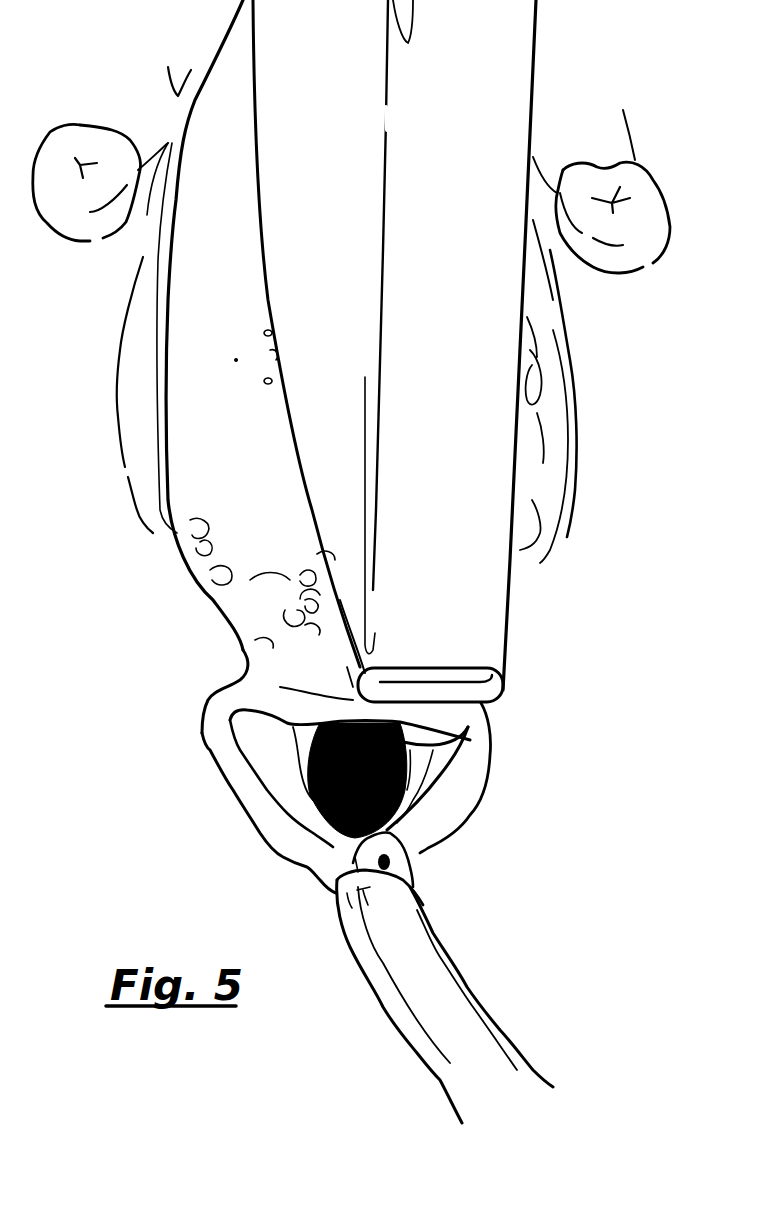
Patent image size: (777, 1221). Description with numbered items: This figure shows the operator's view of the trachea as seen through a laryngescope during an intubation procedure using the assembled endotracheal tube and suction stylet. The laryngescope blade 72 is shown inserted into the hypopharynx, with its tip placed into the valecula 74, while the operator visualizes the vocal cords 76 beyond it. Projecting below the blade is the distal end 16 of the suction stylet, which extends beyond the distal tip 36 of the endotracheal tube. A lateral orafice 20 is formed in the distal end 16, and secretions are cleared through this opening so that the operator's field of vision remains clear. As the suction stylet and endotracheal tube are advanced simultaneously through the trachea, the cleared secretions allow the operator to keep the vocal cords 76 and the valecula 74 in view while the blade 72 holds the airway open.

The laryngescope blade 72 is at (470, 626).
The valecula 74 is at (270, 710).
The vocal cords 76 is at (303, 755).
The distal end 16 is at (413, 850).
The lateral orafice 20 is at (387, 875).
The distal tip 36 is at (324, 878).